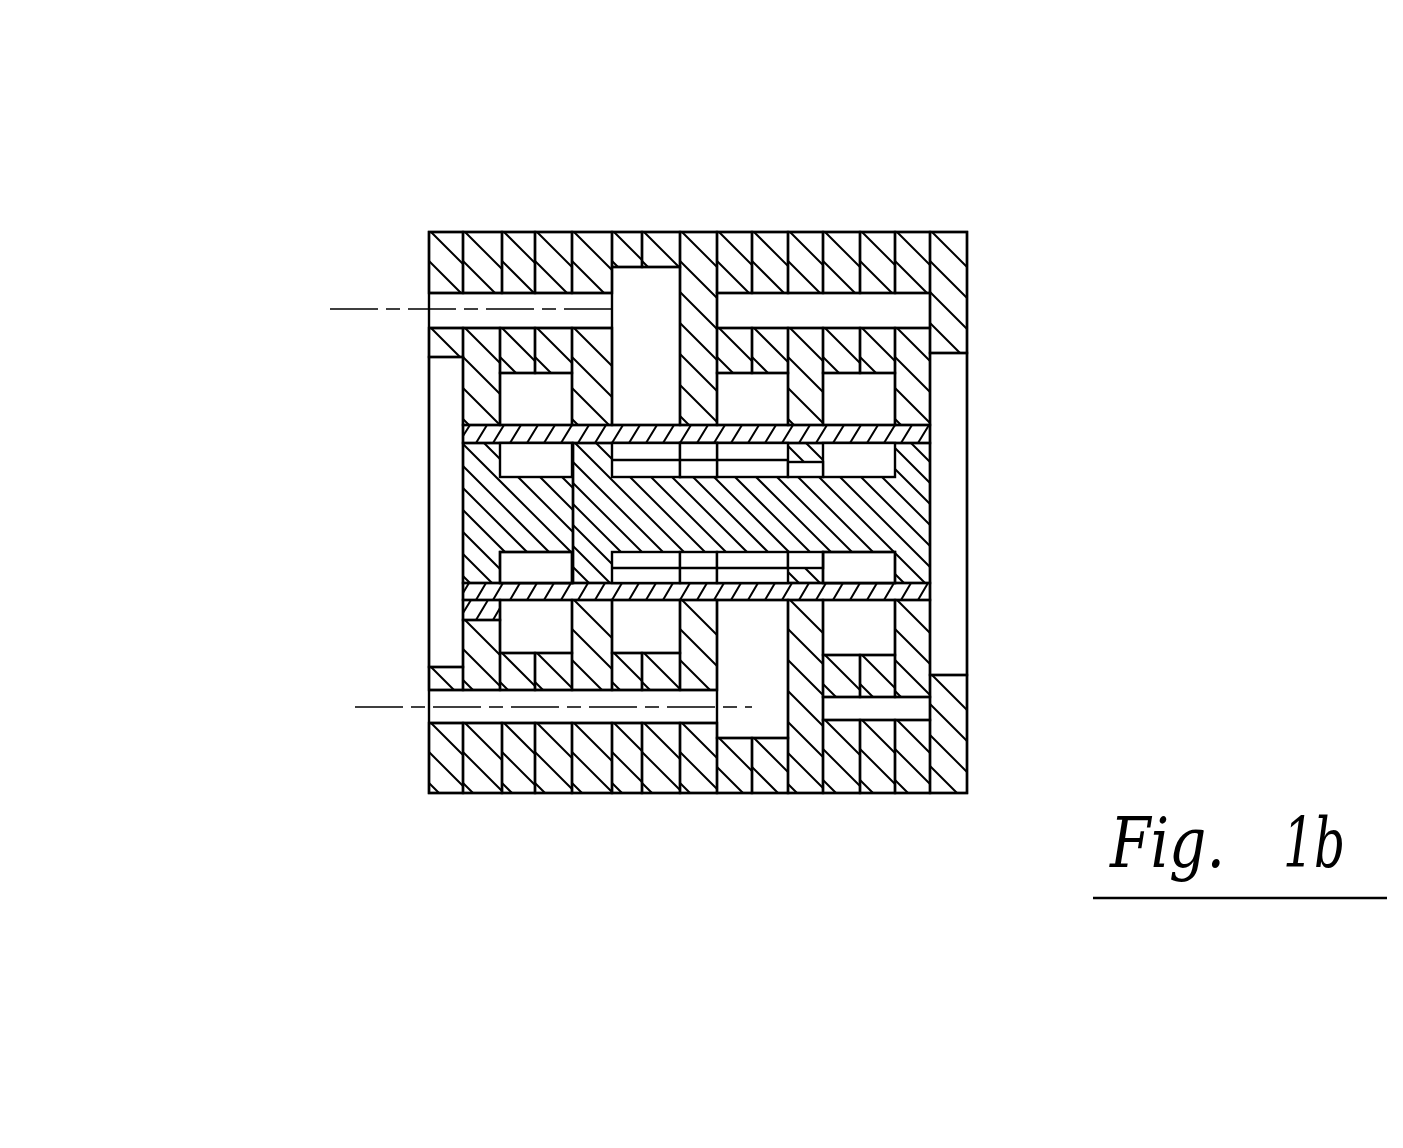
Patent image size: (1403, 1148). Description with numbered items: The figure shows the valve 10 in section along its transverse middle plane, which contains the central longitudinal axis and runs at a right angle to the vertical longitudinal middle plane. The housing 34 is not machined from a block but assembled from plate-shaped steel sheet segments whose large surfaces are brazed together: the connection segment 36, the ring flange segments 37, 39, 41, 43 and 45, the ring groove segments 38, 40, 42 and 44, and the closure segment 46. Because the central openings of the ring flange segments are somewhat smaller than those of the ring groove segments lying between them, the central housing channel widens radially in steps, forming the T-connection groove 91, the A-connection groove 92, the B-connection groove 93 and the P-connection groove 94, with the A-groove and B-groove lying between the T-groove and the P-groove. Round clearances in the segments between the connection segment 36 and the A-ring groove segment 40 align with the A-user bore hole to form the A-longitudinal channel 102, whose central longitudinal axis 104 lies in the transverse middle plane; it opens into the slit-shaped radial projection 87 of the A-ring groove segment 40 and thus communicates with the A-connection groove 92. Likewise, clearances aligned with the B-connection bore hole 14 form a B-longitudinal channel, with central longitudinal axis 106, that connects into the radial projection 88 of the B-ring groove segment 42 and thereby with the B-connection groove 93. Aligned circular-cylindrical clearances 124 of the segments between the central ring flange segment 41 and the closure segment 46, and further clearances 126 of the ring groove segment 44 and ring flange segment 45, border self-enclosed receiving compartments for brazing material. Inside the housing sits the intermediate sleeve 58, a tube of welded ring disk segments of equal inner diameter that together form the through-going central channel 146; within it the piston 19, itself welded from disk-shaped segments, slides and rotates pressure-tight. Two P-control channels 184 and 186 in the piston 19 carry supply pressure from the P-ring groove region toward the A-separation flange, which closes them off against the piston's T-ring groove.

The valve 10 is at (343, 158).
The connection segment 36 is at (429, 258).
The ring flange segment 37 is at (485, 240).
The A-longitudinal channel 102 is at (513, 308).
The central longitudinal axis of the A-longitudinal channel 104 is at (355, 307).
The radial projection 87 is at (643, 330).
The central ring flange segment 41 is at (692, 240).
The B-ring groove segment 42 is at (767, 250).
The ring flange segment 43 is at (810, 236).
The P-control channel 184 is at (701, 455).
The circular-cylindrical clearances 124 is at (905, 298).
The closure segment 46 is at (965, 252).
The housing 34 is at (967, 278).
The B-connection groove 93 is at (770, 378).
The P-connection groove 94 is at (880, 375).
The intermediate sleeve 58 is at (932, 417).
The piston 19 is at (930, 478).
The central channel 146 is at (933, 457).
The P-control channel 186 is at (810, 557).
The B-connection bore hole 14 is at (429, 700).
The central longitudinal axis of the B-longitudinal channel 106 is at (372, 708).
The circular cylindrical clearances 126 is at (932, 712).
The radial projection 88 is at (770, 694).
The ring groove segment 38 is at (550, 785).
The T-connection groove 91 is at (553, 653).
The ring flange segment 39 is at (597, 785).
The A-ring groove segment 40 is at (652, 788).
The A-connection groove 92 is at (661, 653).
The ring groove segment 44 is at (886, 785).
The ring flange segment 45 is at (916, 780).